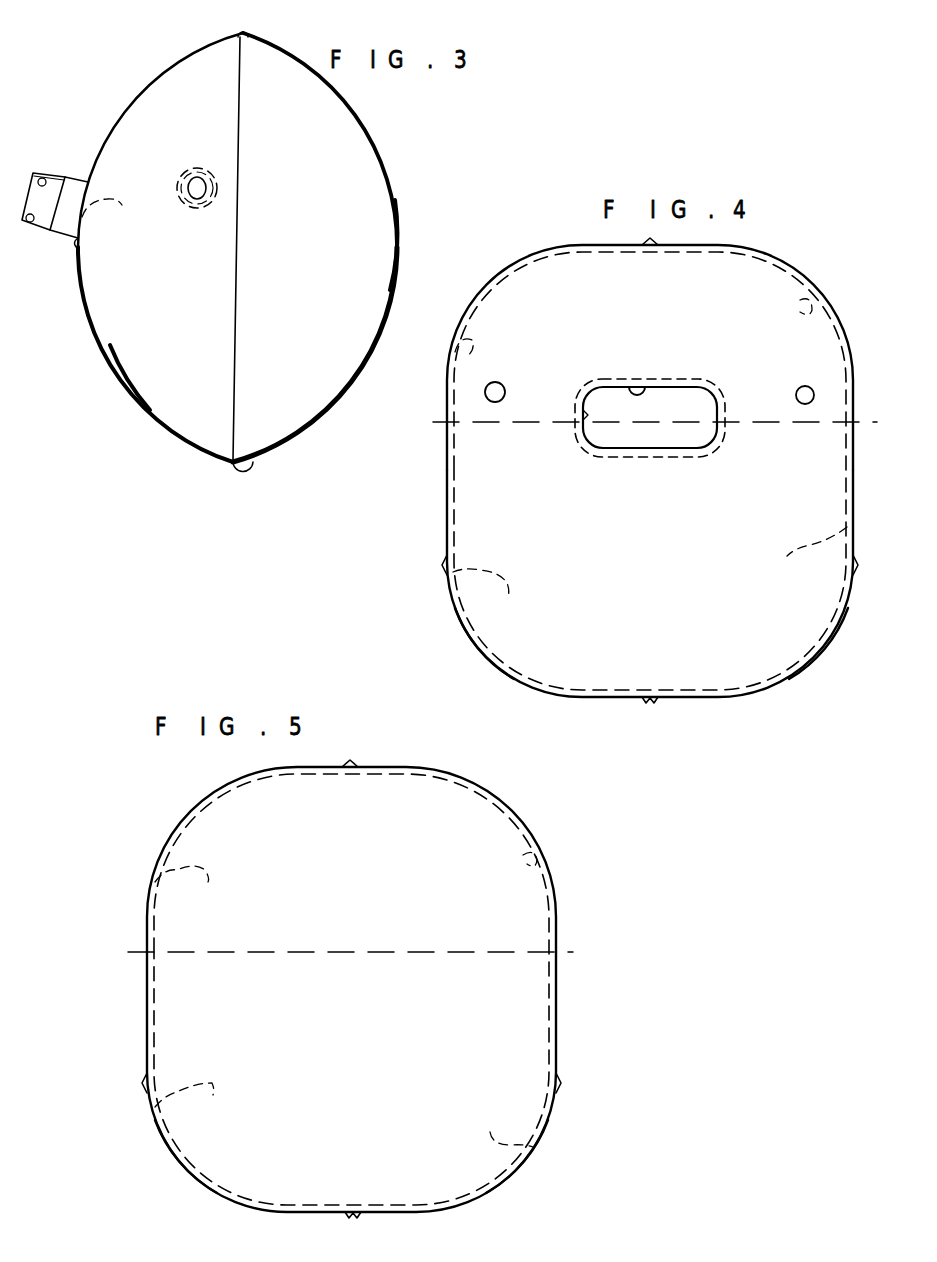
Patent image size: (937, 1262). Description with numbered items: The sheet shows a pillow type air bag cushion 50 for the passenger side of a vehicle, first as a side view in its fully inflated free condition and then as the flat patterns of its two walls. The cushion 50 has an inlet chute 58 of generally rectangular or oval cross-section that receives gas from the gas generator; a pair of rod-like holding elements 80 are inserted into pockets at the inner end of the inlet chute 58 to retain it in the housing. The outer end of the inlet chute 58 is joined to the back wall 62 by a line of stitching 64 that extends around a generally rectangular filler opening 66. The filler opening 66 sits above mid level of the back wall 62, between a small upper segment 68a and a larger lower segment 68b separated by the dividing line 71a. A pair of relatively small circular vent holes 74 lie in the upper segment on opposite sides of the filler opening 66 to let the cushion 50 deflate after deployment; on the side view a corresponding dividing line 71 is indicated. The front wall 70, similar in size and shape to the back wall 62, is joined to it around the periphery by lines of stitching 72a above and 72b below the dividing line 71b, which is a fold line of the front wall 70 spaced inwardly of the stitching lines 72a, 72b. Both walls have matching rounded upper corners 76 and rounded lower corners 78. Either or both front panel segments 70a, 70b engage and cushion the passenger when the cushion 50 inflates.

In FIG. 3, the air bag cushion 50 is at (240, 504).
In FIG. 3, the inlet chute 58 is at (50, 232).
In FIG. 3, the back wall 62 is at (127, 389).
In FIG. 4, the back wall 62 is at (663, 730).
In FIG. 3, the line of stitching 64 is at (87, 181).
In FIG. 4, the line of stitching 64 is at (683, 380).
In FIG. 4, the filler opening 66 is at (642, 396).
In FIG. 3, the upper segment of back wall 68a is at (144, 88).
In FIG. 4, the upper segment of back wall 68a is at (663, 318).
In FIG. 3, the lower segment of back wall 68b is at (162, 424).
In FIG. 4, the lower segment of back wall 68b is at (662, 613).
In FIG. 3, the front wall 70 is at (396, 222).
In FIG. 5, the front wall 70 is at (367, 1248).
In FIG. 3, the upper segment of front wall 70a is at (362, 127).
In FIG. 5, the upper segment of front wall 70a is at (368, 890).
In FIG. 3, the lower segment of front wall 70b is at (378, 337).
In FIG. 5, the lower segment of front wall 70b is at (372, 1068).
In FIG. 3, the fold line 71 is at (108, 218).
In FIG. 4, the dividing line of back panel 71a is at (520, 423).
In FIG. 5, the dividing line of front wall 71b is at (487, 953).
In FIG. 3, the upper line of stitching 72a is at (246, 39).
In FIG. 4, the upper line of stitching 72a is at (453, 347).
In FIG. 5, the upper line of stitching 72a is at (567, 846).
In FIG. 3, the lower line of stitching 72b is at (233, 405).
In FIG. 4, the lower line of stitching 72b is at (783, 735).
In FIG. 5, the lower line of stitching 72b is at (344, 1115).
In FIG. 3, the vent holes 74 is at (193, 184).
In FIG. 4, the vent holes 74 is at (498, 392).
In FIG. 4, the rounded upper corners 76 is at (490, 276).
In FIG. 5, the rounded upper corners 76 is at (192, 812).
In FIG. 4, the rounded lower corners 78 is at (471, 640).
In FIG. 5, the rounded lower corners 78 is at (190, 1173).
In FIG. 3, the holding elements 80 is at (42, 178).